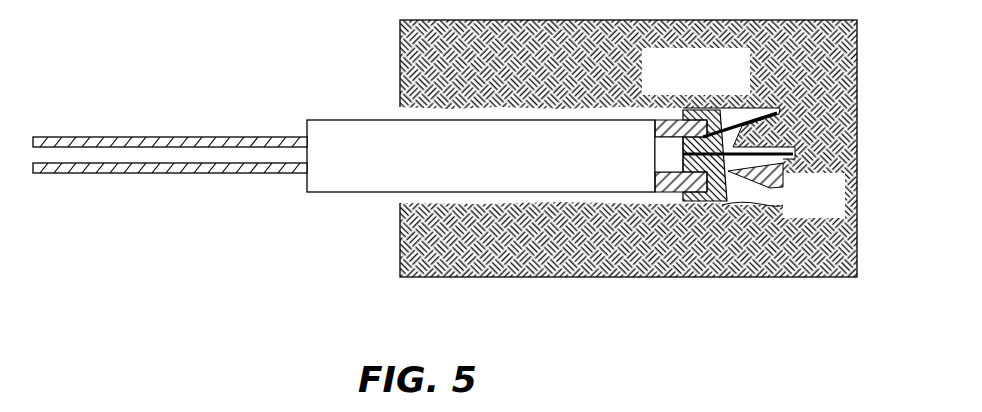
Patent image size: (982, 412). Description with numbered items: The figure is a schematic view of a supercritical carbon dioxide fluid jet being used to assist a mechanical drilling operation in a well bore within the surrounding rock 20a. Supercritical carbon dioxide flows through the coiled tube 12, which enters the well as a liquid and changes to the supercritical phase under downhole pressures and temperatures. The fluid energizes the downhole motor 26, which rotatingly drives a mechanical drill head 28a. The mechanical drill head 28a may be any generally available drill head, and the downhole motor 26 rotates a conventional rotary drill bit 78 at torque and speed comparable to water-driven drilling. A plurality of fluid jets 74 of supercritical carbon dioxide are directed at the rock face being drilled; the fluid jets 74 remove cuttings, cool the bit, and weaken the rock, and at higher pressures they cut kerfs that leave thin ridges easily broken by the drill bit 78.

The coiled tube 12 is at (118, 173).
The wall of housing 20a is at (655, 263).
The downhole motor 26 is at (343, 193).
The mechanical drill head 28a is at (656, 153).
The fluid jets 74 is at (742, 122).
The rotary drill bit 78 is at (697, 112).